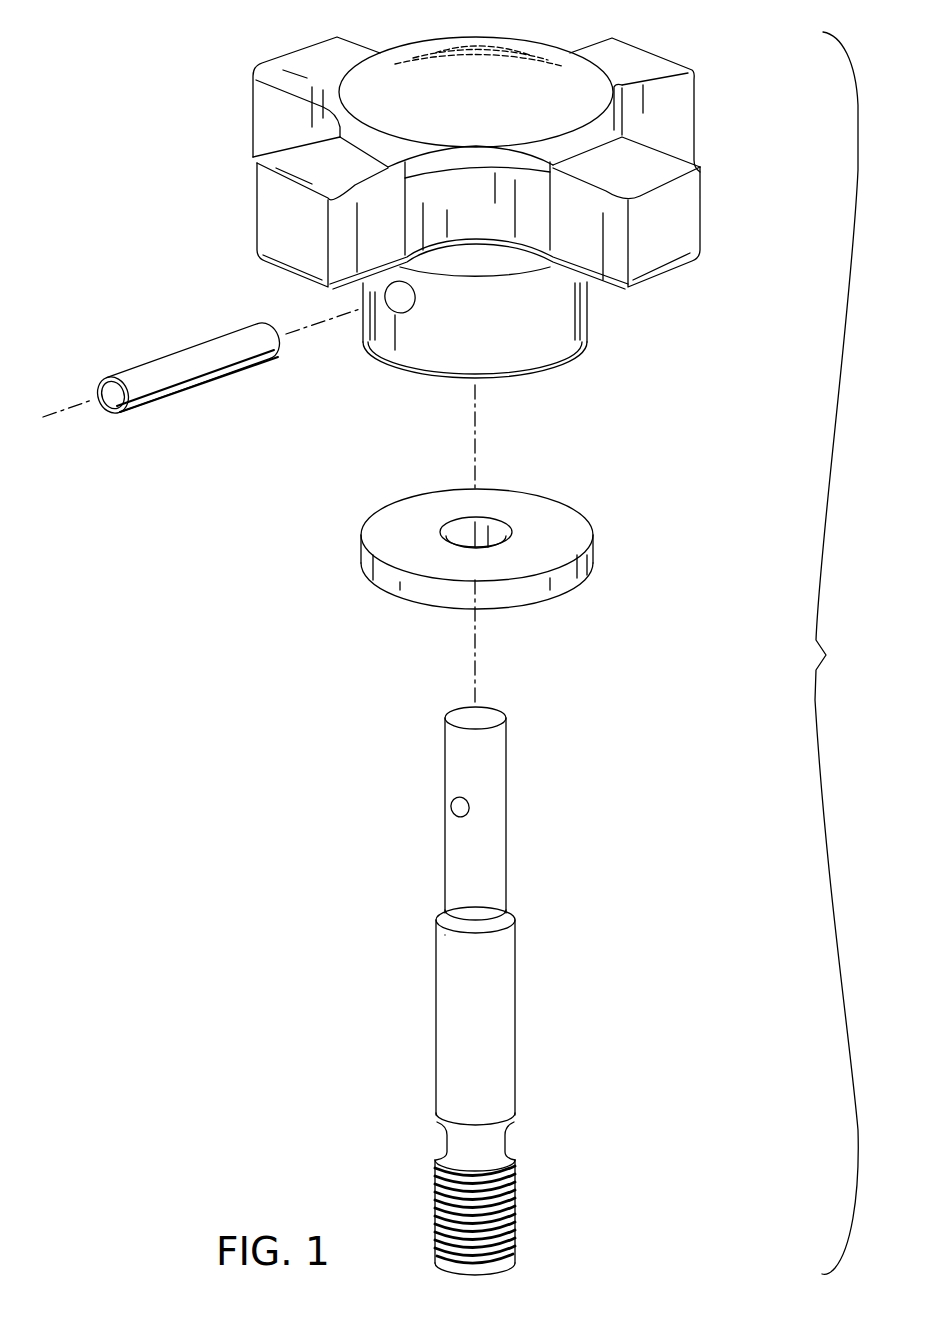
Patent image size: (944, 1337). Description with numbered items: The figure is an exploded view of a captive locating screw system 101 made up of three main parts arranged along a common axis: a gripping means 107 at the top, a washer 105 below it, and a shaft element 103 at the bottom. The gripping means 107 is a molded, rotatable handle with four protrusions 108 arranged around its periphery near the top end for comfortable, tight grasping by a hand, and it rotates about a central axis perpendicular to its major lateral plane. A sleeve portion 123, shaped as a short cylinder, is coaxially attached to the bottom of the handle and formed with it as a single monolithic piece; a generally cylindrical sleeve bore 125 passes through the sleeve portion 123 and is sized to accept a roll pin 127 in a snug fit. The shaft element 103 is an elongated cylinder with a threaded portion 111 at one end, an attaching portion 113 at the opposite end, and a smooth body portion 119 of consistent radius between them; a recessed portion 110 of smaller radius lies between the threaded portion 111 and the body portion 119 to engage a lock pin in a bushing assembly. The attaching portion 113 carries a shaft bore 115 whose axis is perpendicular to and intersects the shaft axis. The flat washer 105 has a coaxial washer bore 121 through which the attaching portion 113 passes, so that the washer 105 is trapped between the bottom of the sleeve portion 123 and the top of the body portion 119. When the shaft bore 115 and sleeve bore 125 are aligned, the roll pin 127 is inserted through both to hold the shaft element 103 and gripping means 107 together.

The captive locating screw system 101 is at (180, 62).
The shaft element 103 is at (505, 1020).
The washer 105 is at (572, 535).
The gripping means 107 is at (716, 123).
The protrusions 108 is at (265, 203).
The recessed portion 110 is at (498, 1142).
The threaded portion 111 is at (507, 1218).
The attaching portion 113 is at (497, 833).
The shaft bore 115 is at (578, 722).
The body portion 119 is at (508, 1078).
The washer bore 121 is at (462, 540).
The sleeve portion 123 is at (563, 337).
The sleeve bore 125 is at (392, 292).
The roll pin 127 is at (143, 380).